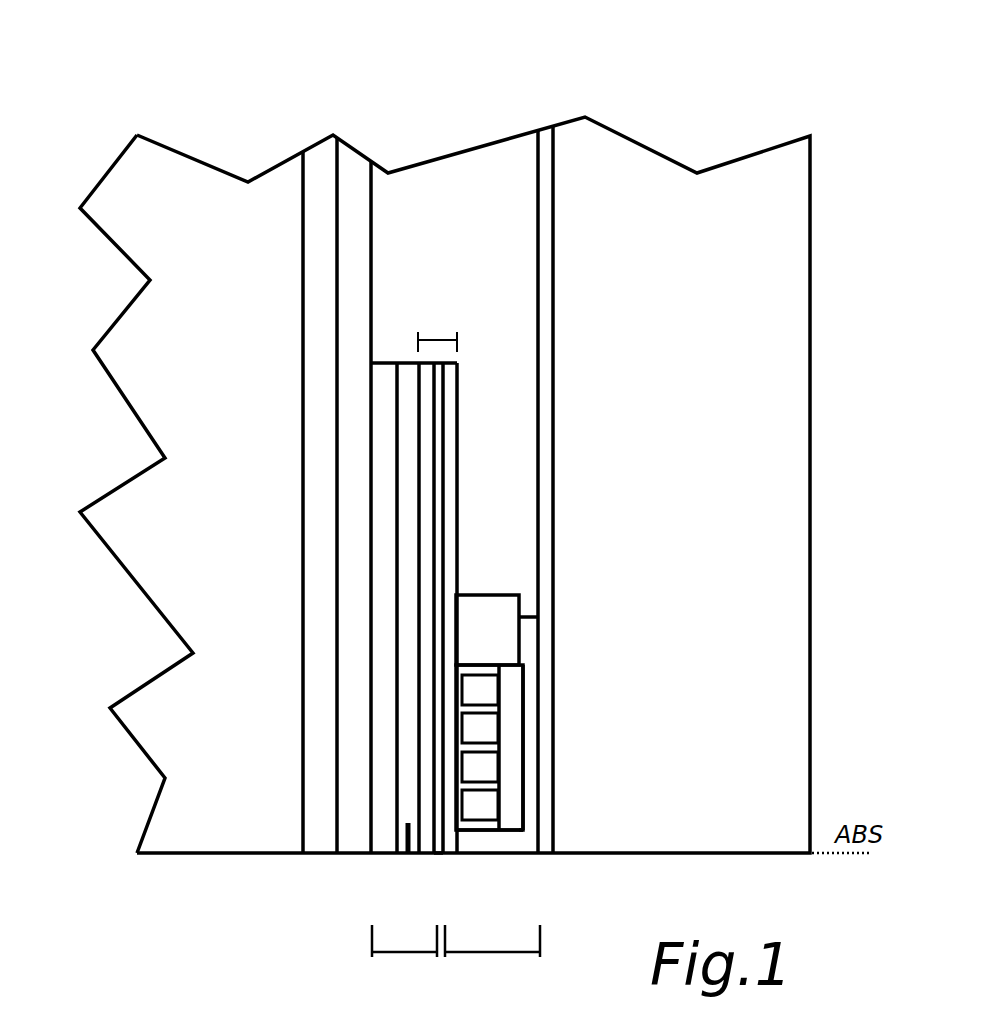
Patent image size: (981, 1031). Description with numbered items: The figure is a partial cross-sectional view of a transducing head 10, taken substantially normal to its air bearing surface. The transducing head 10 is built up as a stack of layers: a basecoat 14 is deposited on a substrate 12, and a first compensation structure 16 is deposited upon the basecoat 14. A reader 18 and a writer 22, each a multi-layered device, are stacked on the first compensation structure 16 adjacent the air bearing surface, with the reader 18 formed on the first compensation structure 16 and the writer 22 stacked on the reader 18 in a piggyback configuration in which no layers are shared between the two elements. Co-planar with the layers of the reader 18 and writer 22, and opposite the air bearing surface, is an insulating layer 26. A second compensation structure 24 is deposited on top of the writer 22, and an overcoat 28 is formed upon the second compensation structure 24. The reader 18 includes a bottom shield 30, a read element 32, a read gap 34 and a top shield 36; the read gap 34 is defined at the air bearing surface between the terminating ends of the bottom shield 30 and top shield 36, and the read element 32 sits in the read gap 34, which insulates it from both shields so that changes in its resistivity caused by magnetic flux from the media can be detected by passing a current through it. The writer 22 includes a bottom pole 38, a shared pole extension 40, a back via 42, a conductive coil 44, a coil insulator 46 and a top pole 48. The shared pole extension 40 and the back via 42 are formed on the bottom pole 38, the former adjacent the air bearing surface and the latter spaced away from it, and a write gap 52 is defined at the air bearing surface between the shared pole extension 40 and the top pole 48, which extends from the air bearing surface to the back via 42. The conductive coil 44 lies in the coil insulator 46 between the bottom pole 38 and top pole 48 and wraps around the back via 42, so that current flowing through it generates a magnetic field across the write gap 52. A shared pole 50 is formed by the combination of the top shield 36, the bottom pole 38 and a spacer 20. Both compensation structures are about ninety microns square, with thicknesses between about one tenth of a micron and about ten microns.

The transducing head 10 is at (97, 113).
The substrate 12 is at (148, 346).
The basecoat 14 is at (318, 170).
The first compensation structure 16 is at (360, 178).
The reader 18 is at (404, 937).
The spacer 20 is at (440, 853).
The writer 22 is at (492, 937).
The second compensation structure 24 is at (548, 176).
The insulating layer 26 is at (475, 170).
The overcoat 28 is at (785, 281).
The bottom shield 30 is at (385, 726).
The read element 32 is at (408, 856).
The read gap 34 is at (407, 590).
The top shield 36 is at (425, 645).
The bottom pole 38 is at (450, 558).
The shared pole extension 40 is at (498, 846).
The back via 42 is at (500, 618).
The conductive coil 44 is at (491, 723).
The coil insulator 46 is at (498, 747).
The top pole 48 is at (535, 814).
The shared pole 50 is at (438, 332).
The write gap 52 is at (520, 857).